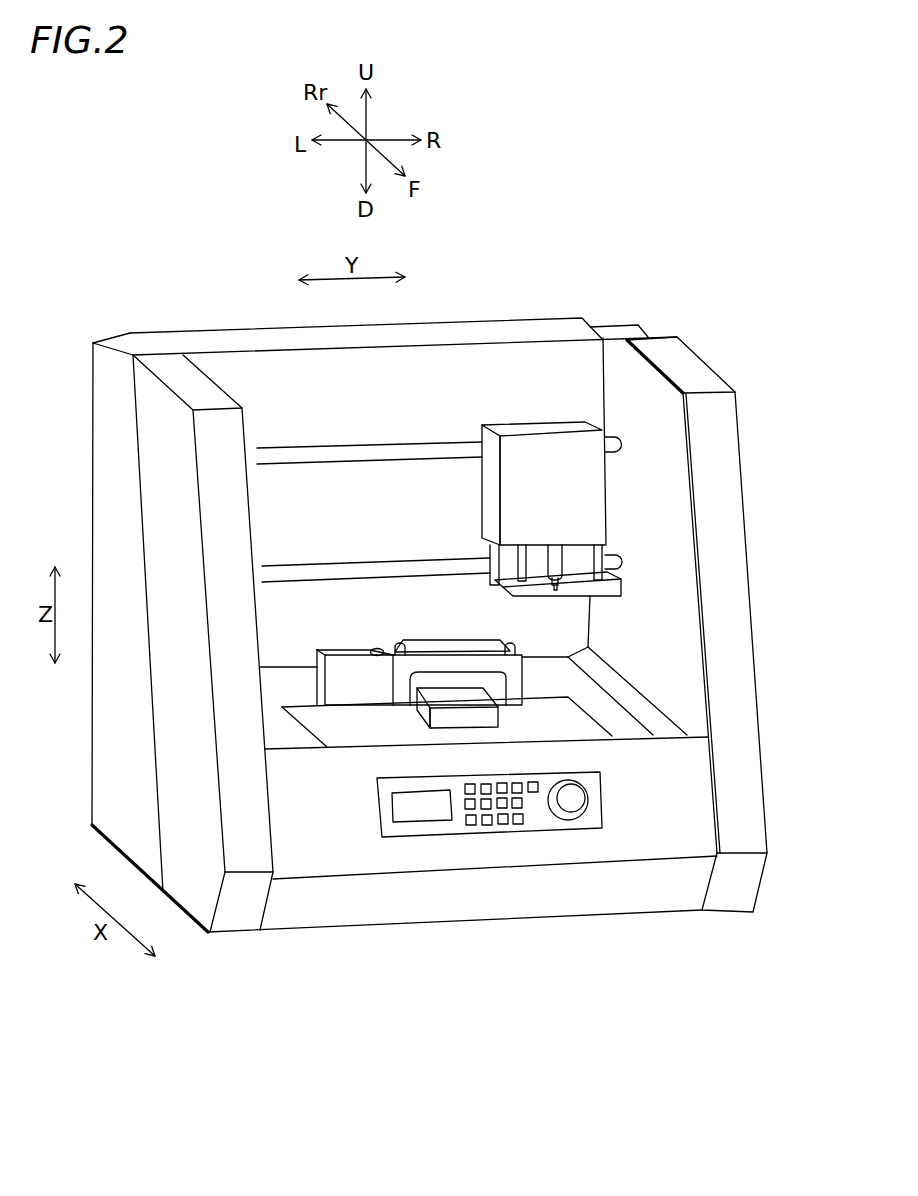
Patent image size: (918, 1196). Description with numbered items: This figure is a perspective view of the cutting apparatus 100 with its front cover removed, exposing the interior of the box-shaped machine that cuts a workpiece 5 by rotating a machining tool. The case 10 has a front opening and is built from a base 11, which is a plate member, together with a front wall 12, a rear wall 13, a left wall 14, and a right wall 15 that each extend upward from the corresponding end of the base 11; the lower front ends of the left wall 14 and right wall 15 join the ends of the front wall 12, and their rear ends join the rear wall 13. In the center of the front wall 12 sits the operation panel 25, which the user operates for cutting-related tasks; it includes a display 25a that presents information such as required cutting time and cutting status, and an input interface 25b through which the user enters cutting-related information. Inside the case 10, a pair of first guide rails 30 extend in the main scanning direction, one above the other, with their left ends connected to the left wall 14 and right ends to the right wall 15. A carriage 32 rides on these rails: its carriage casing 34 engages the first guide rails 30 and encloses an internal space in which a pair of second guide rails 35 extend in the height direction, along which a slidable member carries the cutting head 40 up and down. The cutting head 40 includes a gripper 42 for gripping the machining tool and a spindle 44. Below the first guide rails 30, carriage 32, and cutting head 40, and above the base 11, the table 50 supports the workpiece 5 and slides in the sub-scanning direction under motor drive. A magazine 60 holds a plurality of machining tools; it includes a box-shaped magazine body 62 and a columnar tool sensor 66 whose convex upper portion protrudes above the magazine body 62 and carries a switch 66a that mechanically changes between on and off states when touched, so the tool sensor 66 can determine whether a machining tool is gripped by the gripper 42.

The cutting apparatus 100 is at (677, 286).
The case 10 is at (768, 466).
The base 11 is at (553, 922).
The front wall 12 is at (646, 728).
The rear wall 13 is at (530, 317).
The left wall 14 is at (92, 778).
The right wall 15 is at (750, 538).
The operation panel 25 is at (569, 836).
The display 25a is at (422, 823).
The input interface 25b is at (546, 779).
The first guide rails 30 is at (293, 446).
The carriage 32 is at (510, 420).
The carriage casing 34 is at (548, 422).
The second guide rails 35 is at (611, 557).
The cutting head 40 is at (543, 567).
The gripper 42 is at (565, 590).
The spindle 44 is at (591, 592).
The table 50 is at (604, 692).
The workpiece 5 is at (496, 713).
The magazine 60 is at (455, 640).
The magazine body 62 is at (515, 687).
The tool sensor 66 is at (375, 647).
The switch 66a is at (380, 648).